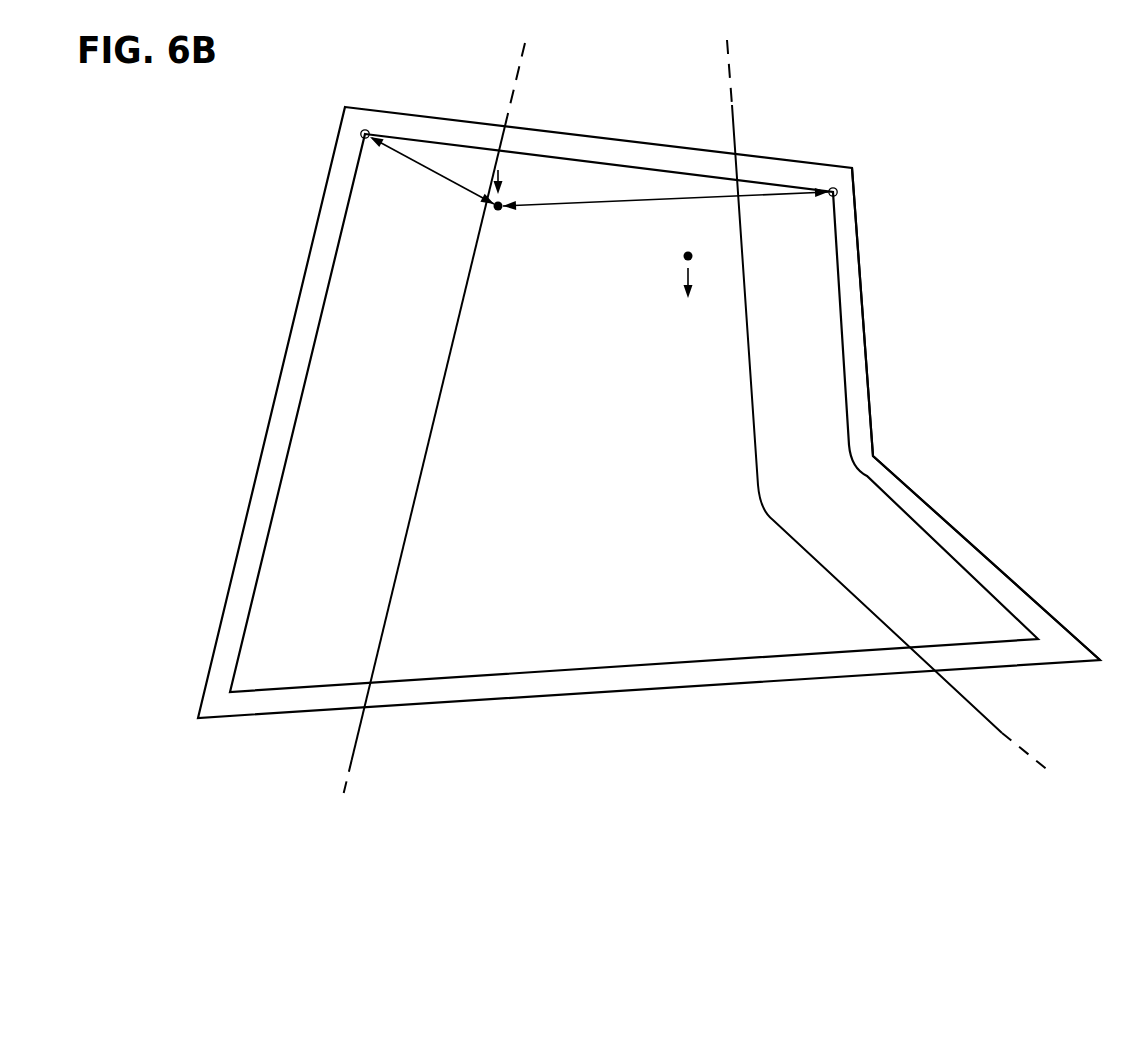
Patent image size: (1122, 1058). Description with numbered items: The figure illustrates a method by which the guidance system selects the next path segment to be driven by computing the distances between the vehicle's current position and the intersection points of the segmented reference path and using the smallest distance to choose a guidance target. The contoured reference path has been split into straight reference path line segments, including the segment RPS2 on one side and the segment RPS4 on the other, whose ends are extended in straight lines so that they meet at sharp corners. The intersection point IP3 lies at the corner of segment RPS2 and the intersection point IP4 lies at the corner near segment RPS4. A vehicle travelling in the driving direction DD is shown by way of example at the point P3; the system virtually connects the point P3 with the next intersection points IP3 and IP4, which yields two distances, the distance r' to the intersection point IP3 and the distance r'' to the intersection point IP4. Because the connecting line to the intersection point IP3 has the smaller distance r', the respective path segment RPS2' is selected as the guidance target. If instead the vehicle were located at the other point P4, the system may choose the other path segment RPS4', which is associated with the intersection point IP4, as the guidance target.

The reference path line segment RPS2 is at (649, 412).
The reference path line segment RPS4 is at (974, 414).
The path segment RPS2' is at (432, 421).
The path segment RPS4' is at (888, 405).
The intersection point IP3 is at (360, 130).
The intersection point IP4 is at (838, 190).
The point P3 is at (502, 222).
The point P4 is at (704, 274).
The driving direction DD is at (514, 182).
The distance r' is at (432, 171).
The distance r'' is at (665, 210).